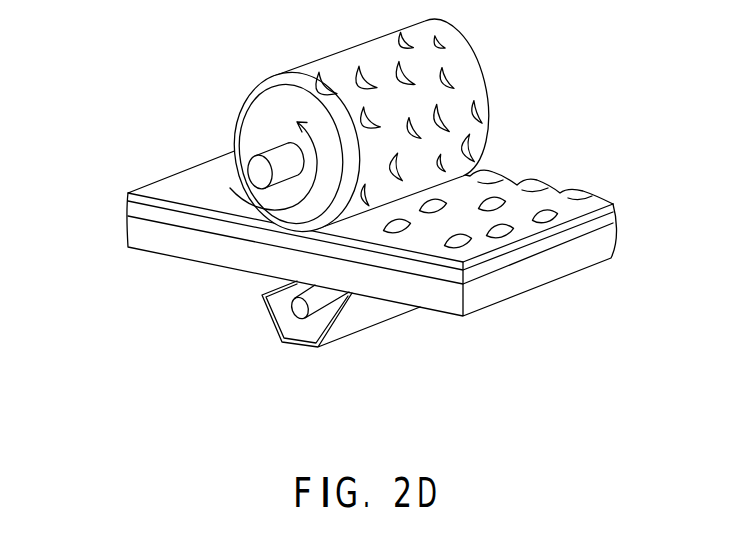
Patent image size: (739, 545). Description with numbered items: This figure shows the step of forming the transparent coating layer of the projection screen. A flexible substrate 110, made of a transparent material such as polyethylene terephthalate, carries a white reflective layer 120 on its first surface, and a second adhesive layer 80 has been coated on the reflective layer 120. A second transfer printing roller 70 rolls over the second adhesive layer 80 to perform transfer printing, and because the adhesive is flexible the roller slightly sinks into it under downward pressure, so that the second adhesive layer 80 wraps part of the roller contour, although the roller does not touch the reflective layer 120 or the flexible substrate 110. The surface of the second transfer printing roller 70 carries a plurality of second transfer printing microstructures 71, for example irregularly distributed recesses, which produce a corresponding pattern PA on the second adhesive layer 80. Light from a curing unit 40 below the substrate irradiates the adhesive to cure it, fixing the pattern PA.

The second transfer printing roller 70 is at (272, 107).
The second transfer printing microstructures 71 is at (448, 79).
The second adhesive layer 80 is at (128, 197).
The reflective layer 120 is at (178, 219).
The flexible substrate 110 is at (235, 248).
The curing unit 40 is at (298, 311).
The pattern PA is at (560, 167).